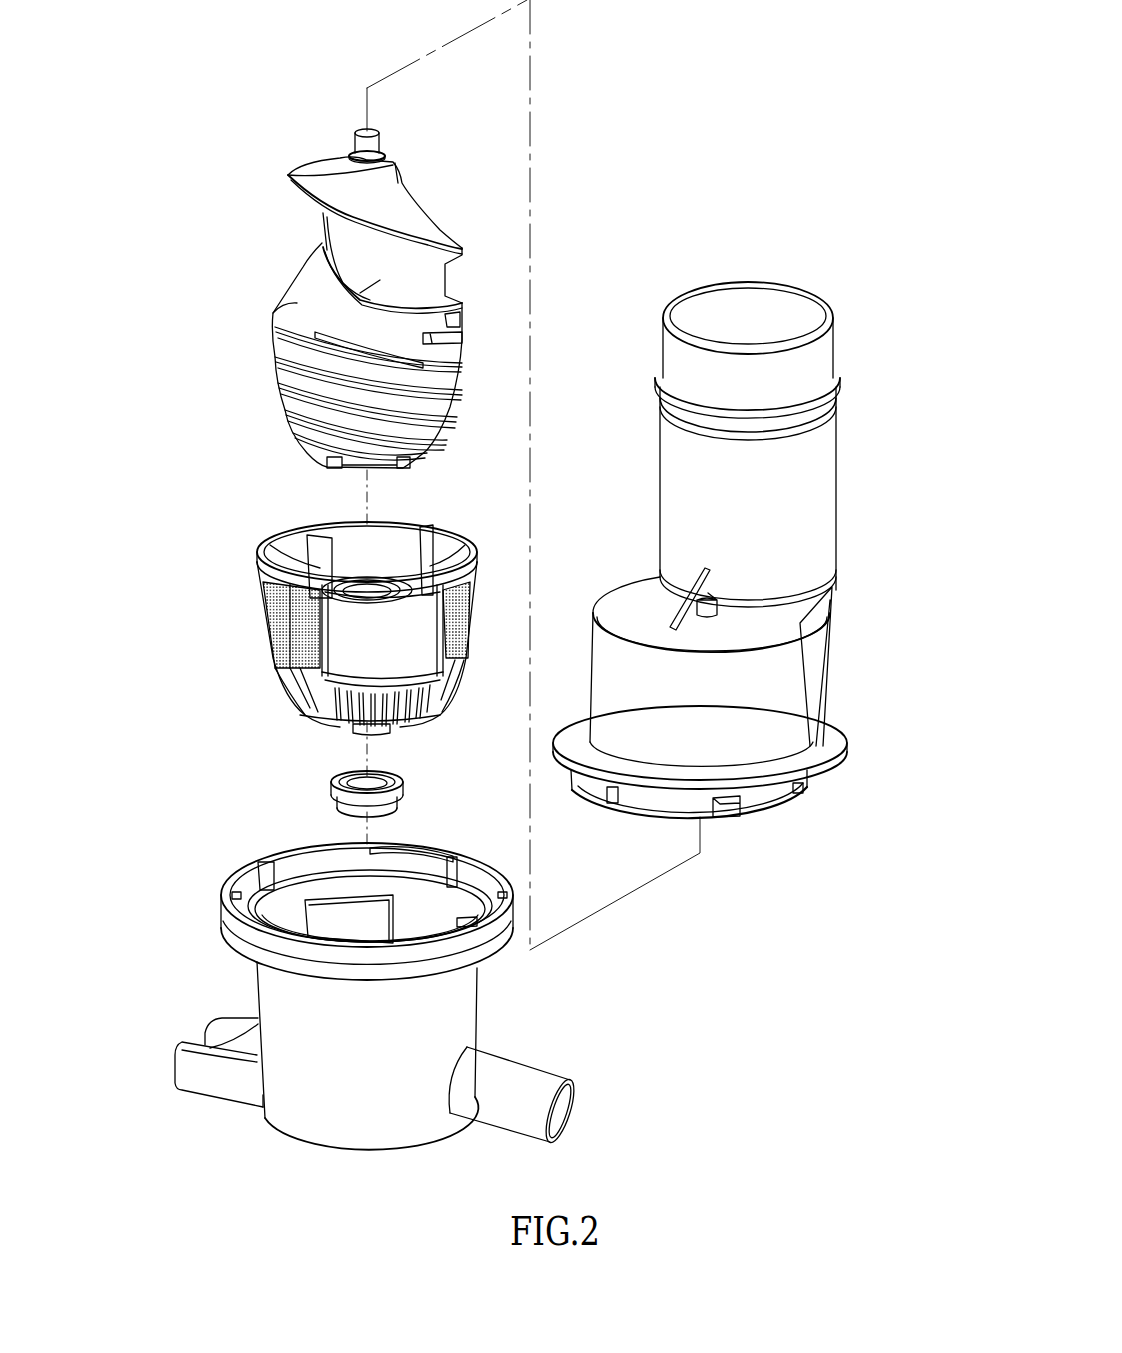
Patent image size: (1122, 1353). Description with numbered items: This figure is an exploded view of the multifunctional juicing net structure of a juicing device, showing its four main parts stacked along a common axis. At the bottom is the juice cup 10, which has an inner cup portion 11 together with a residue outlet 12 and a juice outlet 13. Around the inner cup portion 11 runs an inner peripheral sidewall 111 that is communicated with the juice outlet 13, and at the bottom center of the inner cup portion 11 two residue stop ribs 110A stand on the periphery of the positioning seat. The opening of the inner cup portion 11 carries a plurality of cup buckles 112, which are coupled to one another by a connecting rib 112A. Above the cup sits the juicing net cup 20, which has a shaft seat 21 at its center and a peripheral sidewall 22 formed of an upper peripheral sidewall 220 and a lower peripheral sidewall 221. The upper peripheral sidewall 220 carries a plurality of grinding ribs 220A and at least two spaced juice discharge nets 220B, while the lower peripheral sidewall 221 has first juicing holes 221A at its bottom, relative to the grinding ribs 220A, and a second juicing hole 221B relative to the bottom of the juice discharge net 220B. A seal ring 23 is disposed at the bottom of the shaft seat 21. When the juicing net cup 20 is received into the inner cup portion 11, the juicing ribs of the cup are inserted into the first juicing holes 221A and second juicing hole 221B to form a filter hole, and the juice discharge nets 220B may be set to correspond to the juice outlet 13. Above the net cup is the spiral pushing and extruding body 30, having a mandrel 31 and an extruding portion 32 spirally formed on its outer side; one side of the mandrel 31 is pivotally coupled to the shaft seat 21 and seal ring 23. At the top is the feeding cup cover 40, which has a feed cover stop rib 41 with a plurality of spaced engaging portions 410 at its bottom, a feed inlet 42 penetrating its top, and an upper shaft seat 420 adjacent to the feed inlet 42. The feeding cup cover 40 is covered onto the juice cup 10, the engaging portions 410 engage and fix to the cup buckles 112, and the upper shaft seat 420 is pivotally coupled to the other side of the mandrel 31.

The juice cup 10 is at (205, 914).
The inner cup portion 11 is at (315, 915).
The residue stop ribs 110A is at (330, 915).
The inner peripheral sidewall 111 is at (427, 917).
The cup buckles 112 is at (243, 867).
The connecting rib 112A is at (272, 850).
The residue outlet 12 is at (220, 1038).
The juice outlet 13 is at (563, 1112).
The juicing net cup 20 is at (258, 513).
The shaft seat 21 is at (393, 580).
The peripheral sidewall 22 is at (288, 547).
The upper peripheral sidewall 220 is at (420, 630).
The grinding ribs 220A is at (430, 578).
The juice discharge nets 220B is at (460, 648).
The lower peripheral sidewall 221 is at (428, 681).
The first juicing holes 221A is at (385, 703).
The second juicing hole 221B is at (398, 728).
The seal ring 23 is at (353, 768).
The spiral pushing and extruding body 30 is at (275, 243).
The mandrel 31 is at (362, 147).
The extruding portion 32 is at (294, 382).
The feeding cup cover 40 is at (864, 538).
The feed cover stop rib 41 is at (826, 748).
The engaging portions 410 is at (773, 808).
The feed inlet 42 is at (742, 318).
The upper shaft seat 420 is at (663, 578).